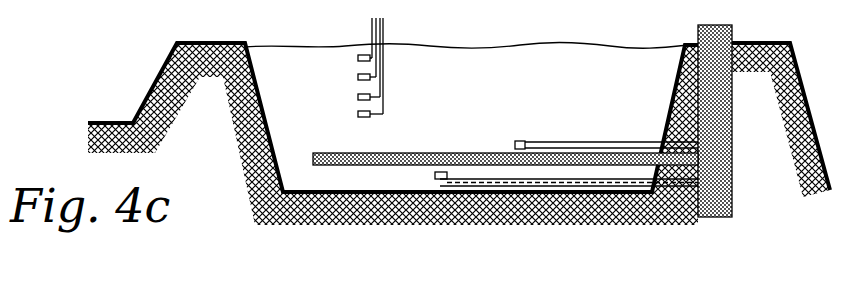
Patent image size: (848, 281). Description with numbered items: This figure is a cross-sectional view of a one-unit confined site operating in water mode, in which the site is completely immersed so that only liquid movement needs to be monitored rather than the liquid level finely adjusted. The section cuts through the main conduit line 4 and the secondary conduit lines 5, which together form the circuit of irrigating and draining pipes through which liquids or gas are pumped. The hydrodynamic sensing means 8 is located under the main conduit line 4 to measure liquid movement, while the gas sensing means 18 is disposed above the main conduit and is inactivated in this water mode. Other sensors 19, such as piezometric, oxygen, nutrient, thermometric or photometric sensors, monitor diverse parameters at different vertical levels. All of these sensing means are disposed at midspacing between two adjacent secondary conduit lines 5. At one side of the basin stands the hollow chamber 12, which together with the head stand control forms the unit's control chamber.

The main conduit line 4 is at (347, 166).
The secondary conduit lines 5 is at (497, 166).
The hydrodynamic sensing means 8 is at (435, 180).
The hollow chamber 12 is at (720, 50).
The gas sensing means 18 is at (517, 141).
The sensors 19 is at (358, 77).